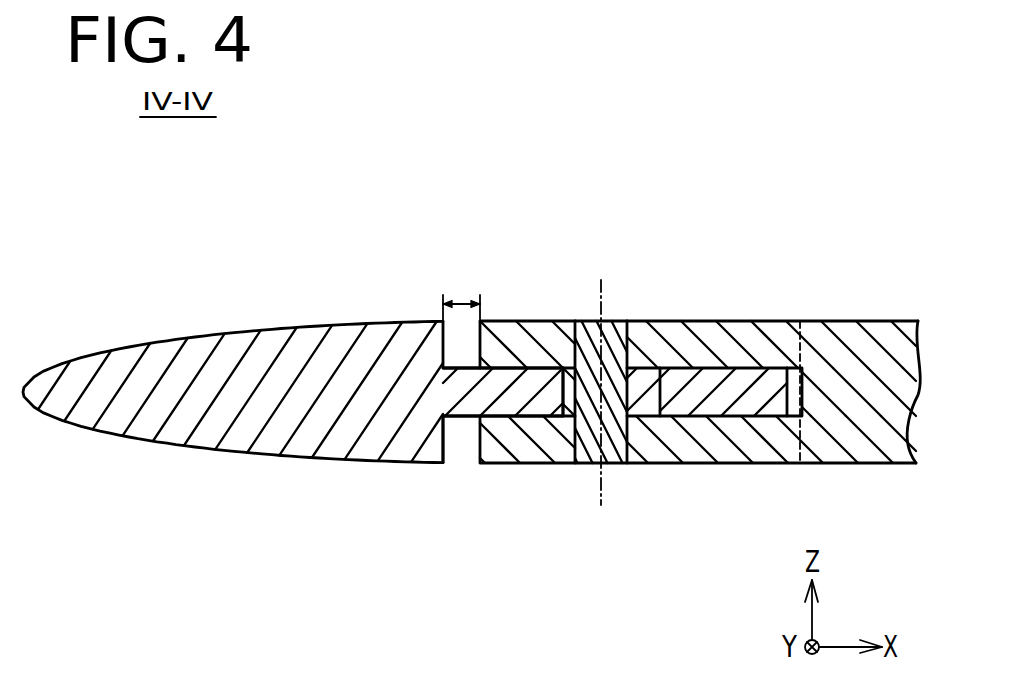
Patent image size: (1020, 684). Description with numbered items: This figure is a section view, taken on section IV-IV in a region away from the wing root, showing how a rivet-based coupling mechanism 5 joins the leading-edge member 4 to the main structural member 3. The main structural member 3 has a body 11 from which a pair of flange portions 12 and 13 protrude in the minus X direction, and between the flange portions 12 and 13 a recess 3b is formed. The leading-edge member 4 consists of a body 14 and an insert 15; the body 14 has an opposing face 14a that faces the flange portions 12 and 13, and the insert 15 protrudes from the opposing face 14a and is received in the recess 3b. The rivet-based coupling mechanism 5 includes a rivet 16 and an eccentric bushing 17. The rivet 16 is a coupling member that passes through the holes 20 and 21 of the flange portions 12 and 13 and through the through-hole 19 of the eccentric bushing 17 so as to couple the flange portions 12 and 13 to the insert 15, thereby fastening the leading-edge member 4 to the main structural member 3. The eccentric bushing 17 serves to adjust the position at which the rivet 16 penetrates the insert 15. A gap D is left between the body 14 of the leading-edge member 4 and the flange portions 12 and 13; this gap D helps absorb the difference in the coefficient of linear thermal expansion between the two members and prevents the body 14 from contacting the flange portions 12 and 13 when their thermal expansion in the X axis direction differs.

The main structural member 3 is at (700, 327).
The recess 3b is at (796, 371).
The leading-edge member 4 is at (293, 381).
The rivet-based coupling mechanism 5 is at (612, 290).
The body 11 is at (852, 320).
The flange portion 12 is at (718, 320).
The flange portion 13 is at (728, 455).
The body 14 is at (322, 322).
The opposing face 14a is at (447, 447).
The insert 15 is at (507, 407).
The rivet 16 is at (613, 463).
The eccentric bushing 17 is at (645, 416).
The through-hole 19 is at (633, 374).
The hole 20 is at (570, 345).
The hole 21 is at (575, 442).
The gap D is at (457, 296).